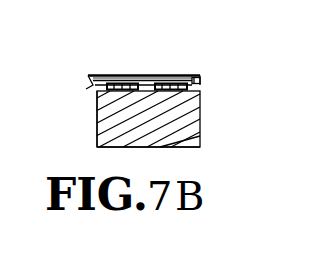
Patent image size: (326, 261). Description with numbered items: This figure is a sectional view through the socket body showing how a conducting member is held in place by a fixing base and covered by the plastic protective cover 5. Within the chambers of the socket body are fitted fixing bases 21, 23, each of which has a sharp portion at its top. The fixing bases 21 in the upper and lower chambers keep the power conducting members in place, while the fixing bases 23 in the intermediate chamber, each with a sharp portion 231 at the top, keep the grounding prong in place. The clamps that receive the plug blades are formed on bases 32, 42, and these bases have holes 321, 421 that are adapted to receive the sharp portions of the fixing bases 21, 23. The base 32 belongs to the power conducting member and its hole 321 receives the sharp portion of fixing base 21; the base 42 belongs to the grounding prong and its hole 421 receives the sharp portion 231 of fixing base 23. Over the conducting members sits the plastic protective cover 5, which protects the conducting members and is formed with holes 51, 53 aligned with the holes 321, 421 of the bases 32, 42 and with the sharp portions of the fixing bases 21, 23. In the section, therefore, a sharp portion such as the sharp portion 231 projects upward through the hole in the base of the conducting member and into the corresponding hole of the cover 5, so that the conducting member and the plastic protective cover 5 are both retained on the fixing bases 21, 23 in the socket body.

The plastic protective cover 5 is at (200, 78).
The hole 53 is at (132, 49).
The hole 421 is at (144, 78).
The sharp portion 231 is at (143, 83).
The hole 51 is at (162, 90).
The hole 321 is at (148, 119).
The base 32 is at (250, 84).
The base 42 is at (202, 84).
The fixing base 21 is at (190, 124).
The fixing base 23 is at (148, 119).